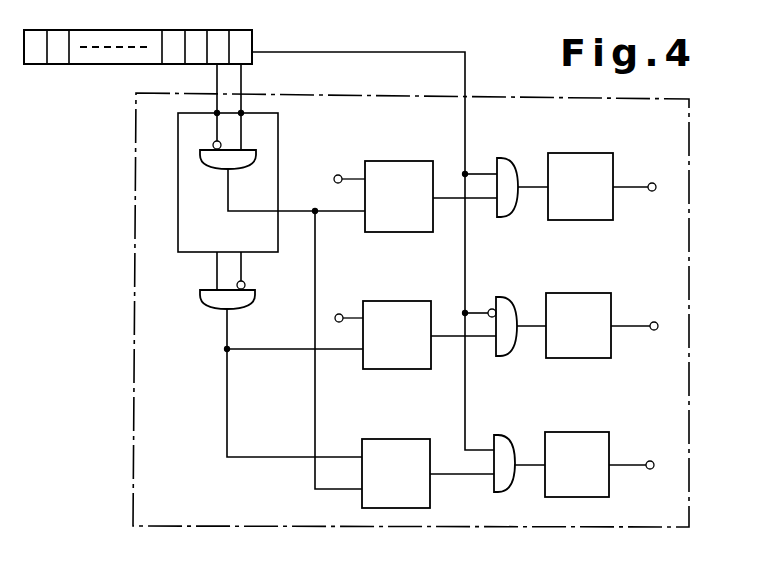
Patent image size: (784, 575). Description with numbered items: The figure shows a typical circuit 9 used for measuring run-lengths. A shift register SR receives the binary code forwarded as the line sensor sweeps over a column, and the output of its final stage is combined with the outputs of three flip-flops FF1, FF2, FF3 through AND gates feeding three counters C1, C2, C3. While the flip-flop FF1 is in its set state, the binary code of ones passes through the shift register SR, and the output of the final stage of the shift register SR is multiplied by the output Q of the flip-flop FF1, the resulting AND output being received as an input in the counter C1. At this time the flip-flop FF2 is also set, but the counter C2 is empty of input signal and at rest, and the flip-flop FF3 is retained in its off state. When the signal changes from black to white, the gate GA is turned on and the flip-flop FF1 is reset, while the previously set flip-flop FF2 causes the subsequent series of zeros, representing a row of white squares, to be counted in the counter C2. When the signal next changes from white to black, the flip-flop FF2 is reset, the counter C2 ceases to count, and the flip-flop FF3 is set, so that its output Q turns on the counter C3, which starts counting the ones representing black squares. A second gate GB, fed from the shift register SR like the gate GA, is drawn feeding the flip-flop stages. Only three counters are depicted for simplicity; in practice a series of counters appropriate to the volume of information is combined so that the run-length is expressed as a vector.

The shift register SR is at (88, 64).
The circuit for measuring run-lengths 9 is at (135, 310).
The gate GA is at (212, 170).
The gate B GB is at (212, 310).
The flip-flop FF1 is at (388, 161).
The flip-flop FF2 is at (392, 301).
The flip-flop FF3 is at (388, 439).
The counter C1 is at (598, 158).
The counter C2 is at (593, 298).
The counter C3 is at (593, 432).